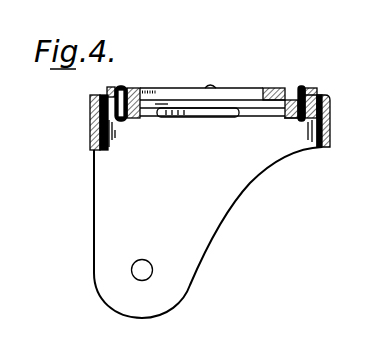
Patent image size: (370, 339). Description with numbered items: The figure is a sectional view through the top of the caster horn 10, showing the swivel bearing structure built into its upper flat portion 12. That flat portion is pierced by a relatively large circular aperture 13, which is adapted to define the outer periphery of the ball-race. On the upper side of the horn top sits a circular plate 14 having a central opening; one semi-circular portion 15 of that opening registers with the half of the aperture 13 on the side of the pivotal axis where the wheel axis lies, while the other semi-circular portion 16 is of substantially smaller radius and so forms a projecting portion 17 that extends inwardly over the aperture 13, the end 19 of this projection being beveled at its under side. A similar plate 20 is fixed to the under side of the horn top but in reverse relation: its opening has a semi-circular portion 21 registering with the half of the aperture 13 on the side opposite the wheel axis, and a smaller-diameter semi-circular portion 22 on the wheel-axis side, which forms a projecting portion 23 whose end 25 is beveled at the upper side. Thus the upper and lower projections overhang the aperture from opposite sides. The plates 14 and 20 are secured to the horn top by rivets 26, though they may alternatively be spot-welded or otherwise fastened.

The horn 10 is at (245, 183).
The upper flat portion 12 is at (320, 100).
The circular aperture 13 is at (283, 112).
The circular plate 14 is at (294, 91).
The semi-circular portion 15 is at (140, 90).
The semi-circular portion 16 is at (266, 89).
The projecting portion 17 is at (280, 94).
The end of projecting portion 19 is at (220, 95).
The plate 20 is at (137, 112).
The semi-circular portion 21 is at (283, 120).
The semi-circular portion 22 is at (172, 100).
The projecting portion 23 is at (160, 112).
The end of projecting portion 25 is at (205, 113).
The rivets 26 is at (96, 113).